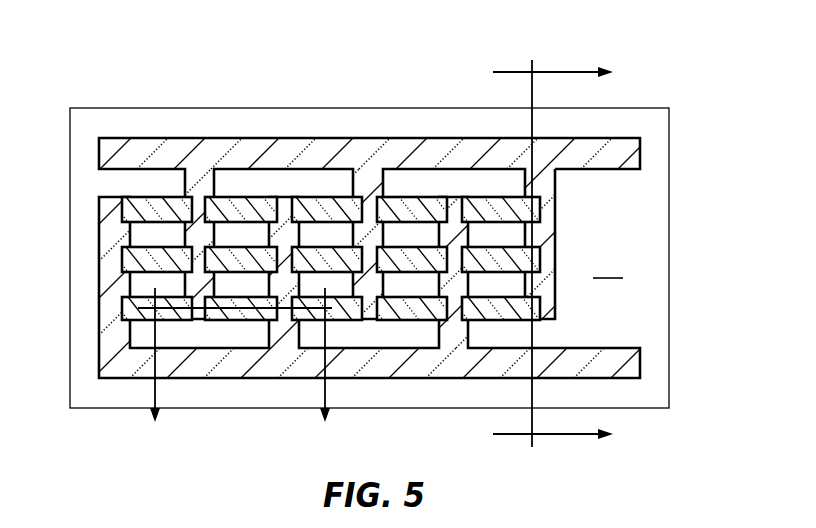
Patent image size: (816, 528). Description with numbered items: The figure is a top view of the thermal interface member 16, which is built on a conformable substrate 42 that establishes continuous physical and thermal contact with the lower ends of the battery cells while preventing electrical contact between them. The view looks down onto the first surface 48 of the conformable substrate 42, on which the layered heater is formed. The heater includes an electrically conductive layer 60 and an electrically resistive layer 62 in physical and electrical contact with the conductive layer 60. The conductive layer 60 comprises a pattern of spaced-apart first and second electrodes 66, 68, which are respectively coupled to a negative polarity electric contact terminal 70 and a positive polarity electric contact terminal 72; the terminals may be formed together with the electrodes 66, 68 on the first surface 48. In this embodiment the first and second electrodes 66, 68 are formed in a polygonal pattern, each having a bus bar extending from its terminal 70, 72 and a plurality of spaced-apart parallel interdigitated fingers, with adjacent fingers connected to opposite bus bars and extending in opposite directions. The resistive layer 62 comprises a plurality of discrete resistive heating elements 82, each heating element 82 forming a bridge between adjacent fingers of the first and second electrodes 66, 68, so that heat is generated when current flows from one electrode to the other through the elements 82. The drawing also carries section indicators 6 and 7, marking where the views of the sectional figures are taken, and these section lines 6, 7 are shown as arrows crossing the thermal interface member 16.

The thermal interface member 16 is at (86, 75).
The conformable substrate 42 is at (672, 270).
The first surface 48 is at (608, 263).
The electrically conductive layer 60 is at (415, 174).
The electrically resistive layer 62 is at (242, 185).
The first electrode 66 is at (355, 160).
The second electrode 68 is at (415, 330).
The negative polarity electric contact terminal 70 is at (642, 153).
The positive polarity electric contact terminal 72 is at (642, 363).
The resistive heating element 82 is at (412, 197).
The section line 6 is at (573, 254).
The section line 7 is at (236, 377).